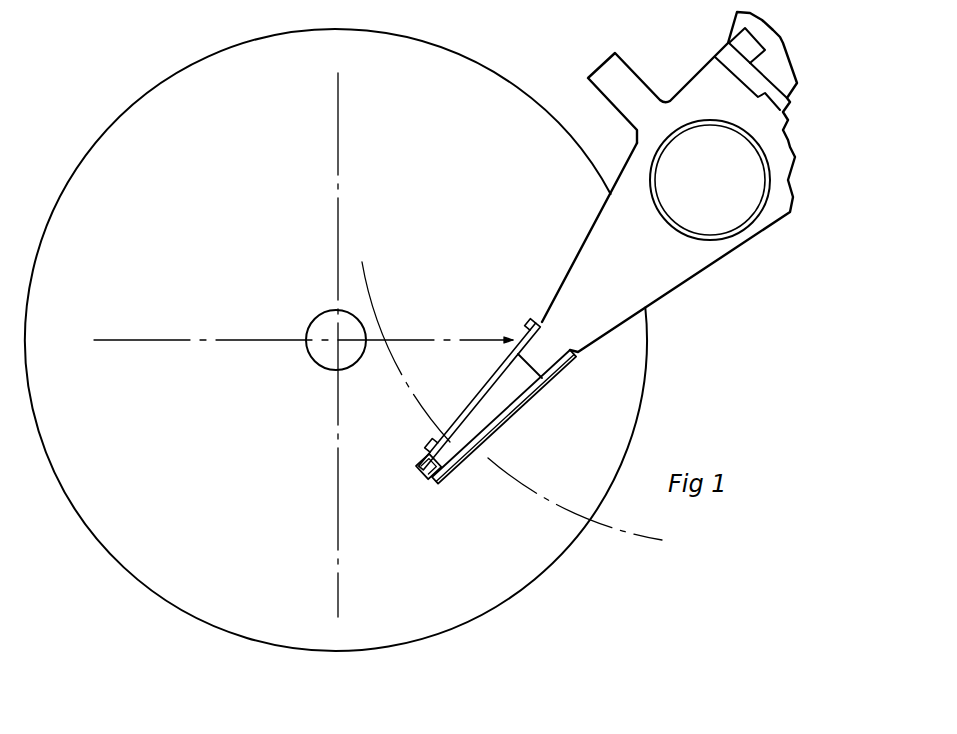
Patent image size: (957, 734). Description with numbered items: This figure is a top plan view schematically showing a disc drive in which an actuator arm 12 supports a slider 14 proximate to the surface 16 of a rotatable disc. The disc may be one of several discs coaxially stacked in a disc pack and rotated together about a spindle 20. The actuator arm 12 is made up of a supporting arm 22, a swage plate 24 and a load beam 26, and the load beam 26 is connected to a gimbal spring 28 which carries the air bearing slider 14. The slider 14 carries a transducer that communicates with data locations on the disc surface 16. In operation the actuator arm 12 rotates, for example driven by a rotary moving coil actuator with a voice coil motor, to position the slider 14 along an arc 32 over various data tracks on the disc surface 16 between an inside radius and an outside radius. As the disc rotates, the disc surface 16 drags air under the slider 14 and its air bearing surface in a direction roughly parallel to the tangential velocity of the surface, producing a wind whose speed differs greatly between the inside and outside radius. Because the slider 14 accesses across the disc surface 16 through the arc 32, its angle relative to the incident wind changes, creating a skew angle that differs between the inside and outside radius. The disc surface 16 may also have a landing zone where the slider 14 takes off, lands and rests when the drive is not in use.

The actuator arm 12 is at (689, 279).
The slider 14 is at (455, 470).
The surface of the disc 16 is at (240, 493).
The spindle 20 is at (318, 352).
The supporting arm 22 is at (599, 215).
The swage plate 24 is at (530, 328).
The load beam 26 is at (512, 383).
The gimbal spring 28 is at (428, 480).
The arc 32 is at (510, 475).